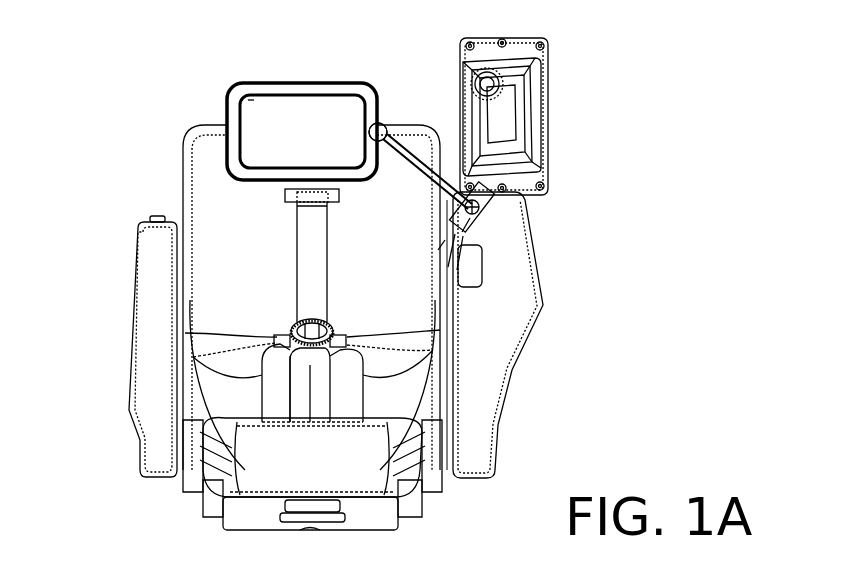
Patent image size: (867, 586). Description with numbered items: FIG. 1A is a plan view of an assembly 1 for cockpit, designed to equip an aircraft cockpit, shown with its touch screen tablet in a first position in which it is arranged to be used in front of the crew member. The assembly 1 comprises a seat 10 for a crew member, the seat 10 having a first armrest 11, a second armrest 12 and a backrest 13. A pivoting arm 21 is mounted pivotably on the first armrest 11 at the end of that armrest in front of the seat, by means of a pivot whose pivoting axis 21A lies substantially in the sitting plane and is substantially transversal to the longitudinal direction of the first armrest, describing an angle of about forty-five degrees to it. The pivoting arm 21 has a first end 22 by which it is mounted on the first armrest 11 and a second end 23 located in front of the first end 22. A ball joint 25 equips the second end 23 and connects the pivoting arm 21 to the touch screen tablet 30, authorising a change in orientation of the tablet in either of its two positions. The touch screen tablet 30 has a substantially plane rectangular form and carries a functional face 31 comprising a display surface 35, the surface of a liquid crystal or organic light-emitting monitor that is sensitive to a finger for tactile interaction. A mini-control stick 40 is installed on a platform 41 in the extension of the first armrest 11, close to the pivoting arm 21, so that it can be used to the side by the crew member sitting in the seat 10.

The assembly for cockpit 1 is at (102, 104).
The seat 10 is at (207, 168).
The first armrest 11 is at (507, 295).
The second armrest 12 is at (150, 345).
The backrest 13 is at (373, 473).
The pivoting arm 21 is at (407, 152).
The pivoting axis 21A is at (480, 203).
The first end 22 is at (490, 197).
The second end 23 is at (378, 123).
The ball joint 25 is at (378, 132).
The touch screen tablet 30 is at (308, 107).
The functional face 31 is at (258, 100).
The display surface 35 is at (247, 108).
The mini-control stick 40 is at (513, 90).
The platform 41 is at (523, 47).